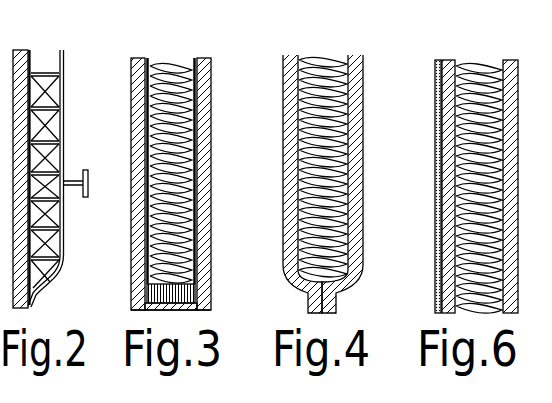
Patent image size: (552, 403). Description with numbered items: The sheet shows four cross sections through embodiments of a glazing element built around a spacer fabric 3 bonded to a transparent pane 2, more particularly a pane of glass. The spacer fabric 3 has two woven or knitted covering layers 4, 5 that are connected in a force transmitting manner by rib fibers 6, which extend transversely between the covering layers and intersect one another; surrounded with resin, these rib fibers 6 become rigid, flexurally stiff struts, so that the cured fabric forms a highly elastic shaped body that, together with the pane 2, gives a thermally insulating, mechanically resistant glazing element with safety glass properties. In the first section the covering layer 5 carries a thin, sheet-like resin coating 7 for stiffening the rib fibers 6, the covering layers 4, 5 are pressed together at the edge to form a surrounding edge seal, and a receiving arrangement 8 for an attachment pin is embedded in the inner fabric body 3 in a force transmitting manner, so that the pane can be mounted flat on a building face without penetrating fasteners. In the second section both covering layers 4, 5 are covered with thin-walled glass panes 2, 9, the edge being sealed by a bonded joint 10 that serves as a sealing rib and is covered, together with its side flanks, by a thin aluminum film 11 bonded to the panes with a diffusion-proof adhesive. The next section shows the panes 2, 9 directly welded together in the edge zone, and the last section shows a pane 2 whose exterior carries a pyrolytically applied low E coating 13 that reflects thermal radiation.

In FIG. 3, the transparent pane 2 is at (137, 115).
In FIG. 4, the transparent pane 2 is at (285, 86).
In FIG. 6, the transparent pane 2 is at (447, 200).
In FIG. 2, the spacer fabric 3 is at (52, 244).
In FIG. 3, the spacer fabric 3 is at (201, 148).
In FIG. 2, the covering layer 4 is at (30, 52).
In FIG. 3, the covering layer 4 is at (152, 62).
In FIG. 2, the covering layer 5 is at (58, 52).
In FIG. 3, the covering layer 5 is at (185, 178).
In FIG. 3, the rib fibers 6 is at (196, 112).
In FIG. 2, the sheet-like coating 7 is at (64, 56).
In FIG. 2, the receiving arrangements 8 is at (86, 195).
In FIG. 3, the glass pane 9 is at (205, 144).
In FIG. 4, the glass pane 9 is at (360, 90).
In FIG. 6, the glass pane 9 is at (517, 186).
In FIG. 3, the bonded joint 10 is at (194, 288).
In FIG. 3, the aluminum film 11 is at (194, 302).
In FIG. 6, the low E coating 13 is at (437, 168).